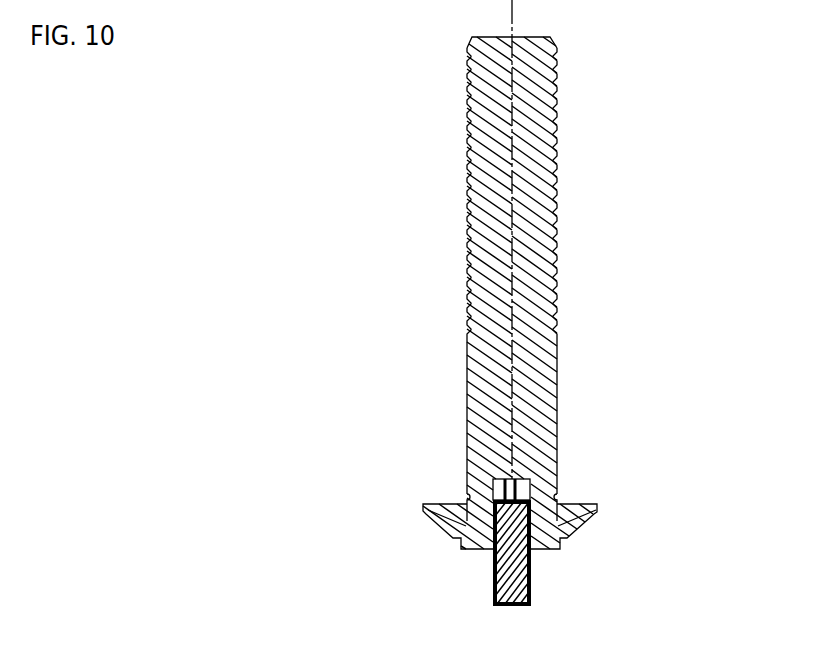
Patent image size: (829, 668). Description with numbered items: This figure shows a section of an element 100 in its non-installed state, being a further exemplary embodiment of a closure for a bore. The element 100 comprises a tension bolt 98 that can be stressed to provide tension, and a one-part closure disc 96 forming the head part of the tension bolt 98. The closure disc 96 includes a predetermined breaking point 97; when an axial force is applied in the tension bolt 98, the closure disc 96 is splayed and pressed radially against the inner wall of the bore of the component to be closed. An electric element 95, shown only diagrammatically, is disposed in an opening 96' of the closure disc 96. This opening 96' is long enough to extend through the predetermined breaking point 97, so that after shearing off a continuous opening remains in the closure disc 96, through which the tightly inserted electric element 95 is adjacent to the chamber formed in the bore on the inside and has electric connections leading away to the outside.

The element 100 is at (612, 493).
The tension bolt 98 is at (500, 232).
The predetermined breaking point 97 is at (467, 495).
The closure disc 96 is at (561, 561).
The opening 96' is at (599, 430).
The electric element 95 is at (493, 583).